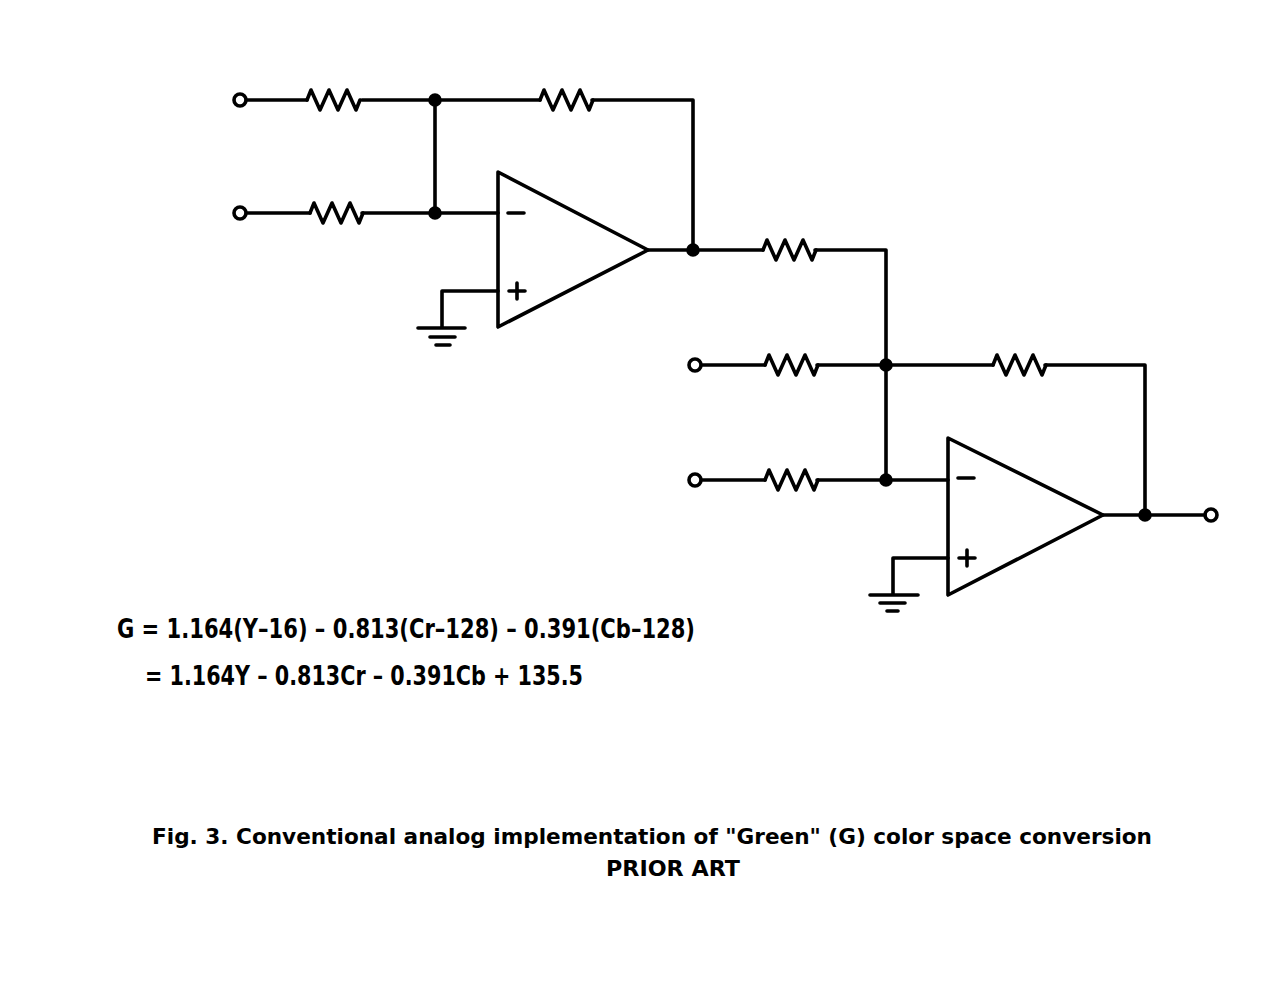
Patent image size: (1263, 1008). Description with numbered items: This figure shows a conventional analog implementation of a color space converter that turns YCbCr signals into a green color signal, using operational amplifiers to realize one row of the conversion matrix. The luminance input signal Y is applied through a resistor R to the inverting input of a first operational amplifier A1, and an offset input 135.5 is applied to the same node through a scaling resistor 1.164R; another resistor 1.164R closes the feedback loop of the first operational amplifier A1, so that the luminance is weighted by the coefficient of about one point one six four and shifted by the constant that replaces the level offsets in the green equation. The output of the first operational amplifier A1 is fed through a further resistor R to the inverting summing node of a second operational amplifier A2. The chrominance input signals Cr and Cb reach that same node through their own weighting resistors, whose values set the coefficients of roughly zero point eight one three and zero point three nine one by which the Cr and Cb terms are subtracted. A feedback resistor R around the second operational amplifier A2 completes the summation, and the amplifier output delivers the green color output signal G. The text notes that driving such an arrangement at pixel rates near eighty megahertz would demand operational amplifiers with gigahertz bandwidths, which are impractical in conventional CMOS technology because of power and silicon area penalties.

The luminance input signal Y is at (254, 101).
The offset input 135.5 is at (229, 218).
The resistor R is at (676, 211).
The scaling resistor 1.164R is at (448, 156).
The first operational amplifier A1 is at (533, 258).
The red-difference chrominance input signal Cr is at (707, 365).
The blue-difference chrominance input signal Cb is at (706, 479).
The second operational amplifier A2 is at (986, 524).
The green color output signal G is at (1199, 518).